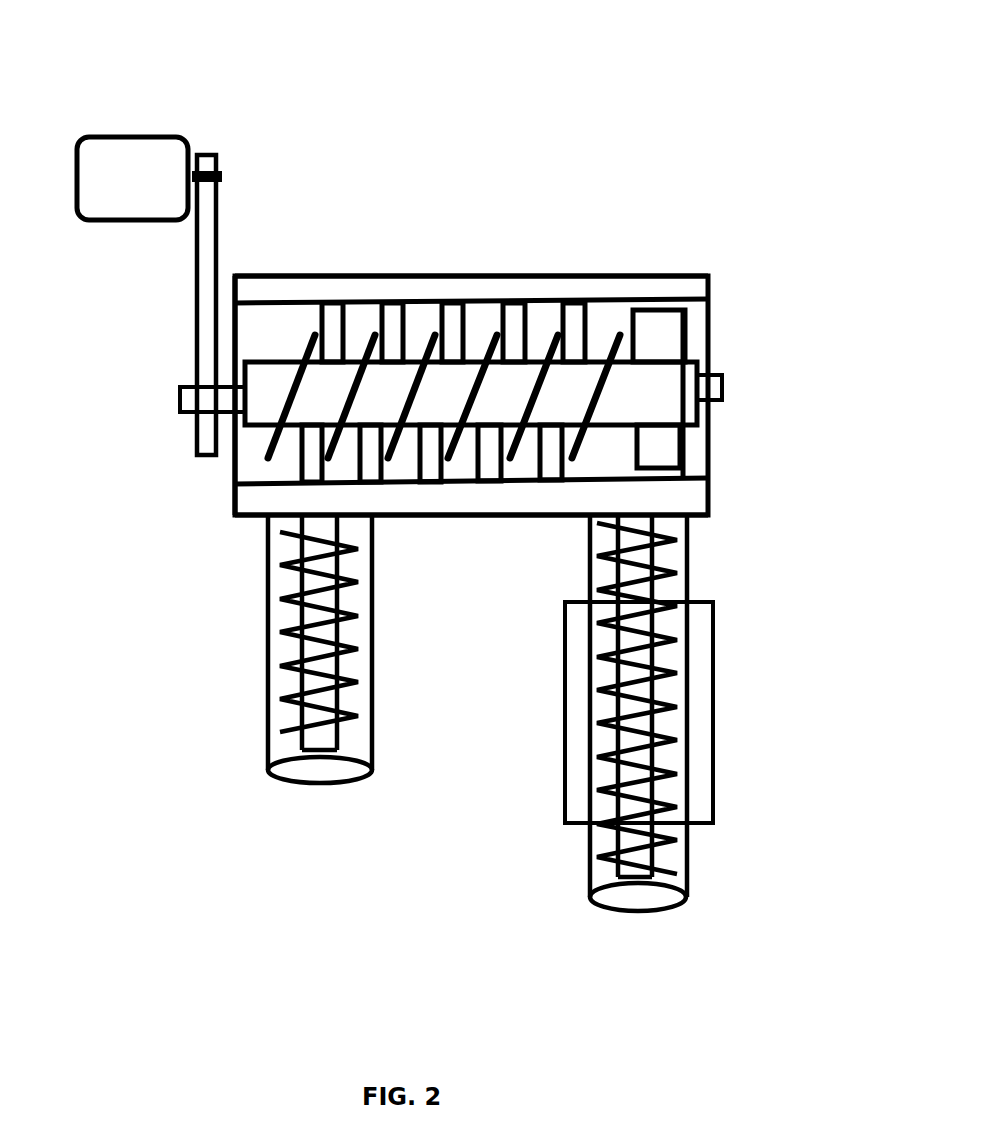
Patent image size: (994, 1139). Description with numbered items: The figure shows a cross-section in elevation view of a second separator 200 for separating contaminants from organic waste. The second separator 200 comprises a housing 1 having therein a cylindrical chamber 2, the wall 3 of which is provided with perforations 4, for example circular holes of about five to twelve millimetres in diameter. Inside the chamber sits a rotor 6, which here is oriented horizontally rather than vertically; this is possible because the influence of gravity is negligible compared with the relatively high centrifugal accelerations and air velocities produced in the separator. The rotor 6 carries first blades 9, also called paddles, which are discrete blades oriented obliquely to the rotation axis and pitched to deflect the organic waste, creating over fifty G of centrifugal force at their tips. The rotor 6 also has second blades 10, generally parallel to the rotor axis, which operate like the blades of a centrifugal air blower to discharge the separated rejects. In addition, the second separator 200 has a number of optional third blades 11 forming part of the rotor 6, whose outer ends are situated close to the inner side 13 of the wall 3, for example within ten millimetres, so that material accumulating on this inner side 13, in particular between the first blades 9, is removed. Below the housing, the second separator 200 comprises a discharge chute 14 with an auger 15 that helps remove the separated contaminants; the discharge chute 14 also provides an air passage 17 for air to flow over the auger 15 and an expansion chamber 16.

The second separator 200 is at (556, 80).
The housing 1 is at (687, 277).
The cylindrical chamber 2 is at (640, 446).
The wall 3 is at (478, 305).
The perforations 4 is at (585, 303).
The rotor 6 is at (471, 393).
The first blades 9 is at (400, 440).
The second blades 10 is at (660, 330).
The third blades 11 is at (343, 303).
The inner side 13 is at (253, 320).
The discharge chute 14 is at (690, 514).
The auger 15 is at (645, 757).
The expansion chamber 16 is at (713, 712).
The air passage 17 is at (668, 590).